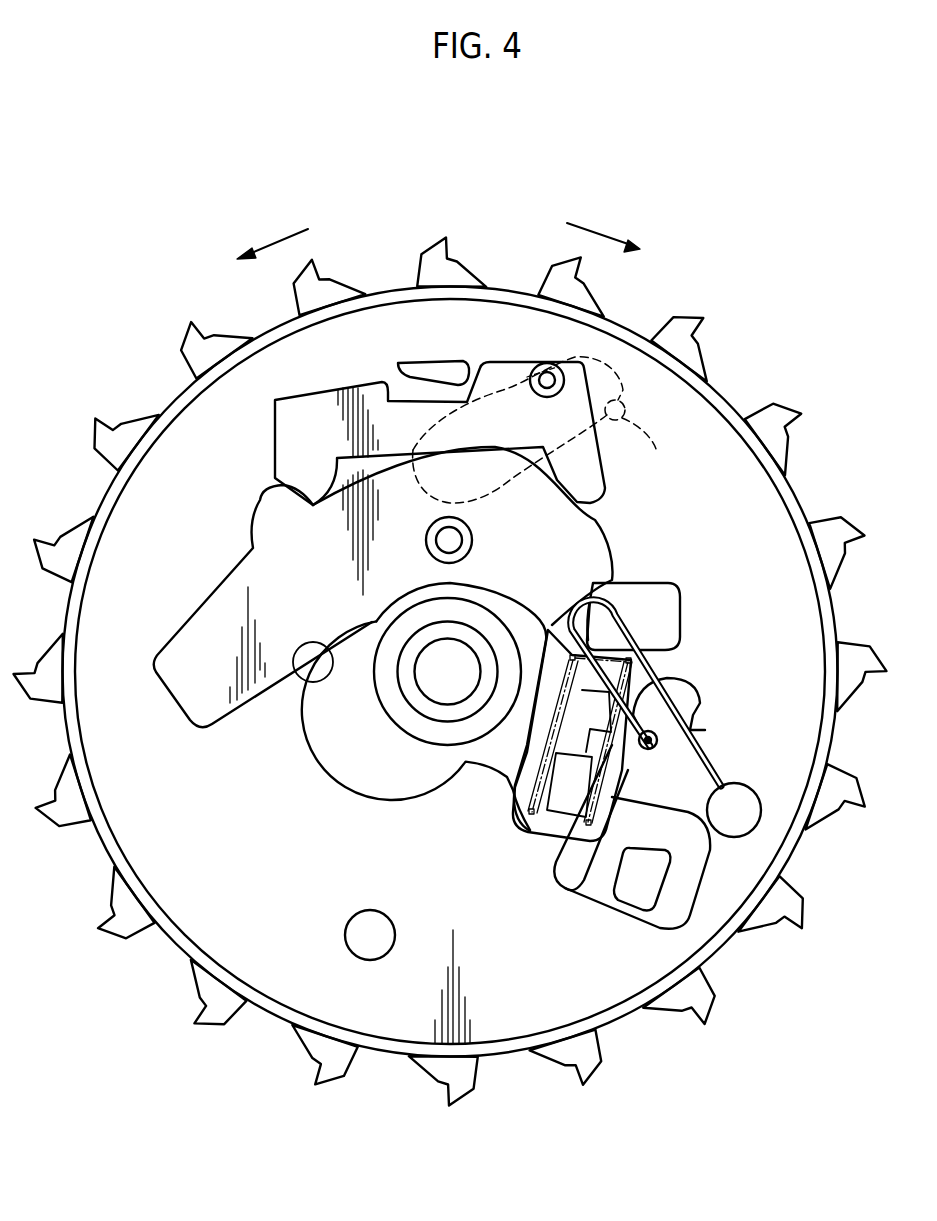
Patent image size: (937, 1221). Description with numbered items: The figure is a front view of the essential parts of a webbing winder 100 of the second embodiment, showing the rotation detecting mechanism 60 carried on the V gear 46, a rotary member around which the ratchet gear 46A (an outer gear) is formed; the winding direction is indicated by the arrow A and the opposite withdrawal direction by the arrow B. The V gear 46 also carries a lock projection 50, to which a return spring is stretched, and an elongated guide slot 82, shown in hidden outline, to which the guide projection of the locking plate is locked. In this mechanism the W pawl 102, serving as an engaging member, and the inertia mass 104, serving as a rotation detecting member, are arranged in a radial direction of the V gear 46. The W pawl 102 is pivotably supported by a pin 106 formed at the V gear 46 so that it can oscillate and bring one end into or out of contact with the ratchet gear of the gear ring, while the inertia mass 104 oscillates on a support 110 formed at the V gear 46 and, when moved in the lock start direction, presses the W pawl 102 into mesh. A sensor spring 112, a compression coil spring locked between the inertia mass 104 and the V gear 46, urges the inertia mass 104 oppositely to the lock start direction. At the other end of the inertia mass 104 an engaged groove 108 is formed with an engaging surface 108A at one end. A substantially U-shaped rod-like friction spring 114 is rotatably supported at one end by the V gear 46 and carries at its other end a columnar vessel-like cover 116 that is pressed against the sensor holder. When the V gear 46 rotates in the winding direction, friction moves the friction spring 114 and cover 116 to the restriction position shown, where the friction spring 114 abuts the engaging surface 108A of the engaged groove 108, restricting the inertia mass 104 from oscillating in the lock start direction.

The rotation detecting mechanism 60 is at (450, 672).
The webbing winder 100 is at (668, 392).
The V gear 46 is at (450, 687).
The ratchet gear 46A is at (600, 1066).
The W pawl 102 is at (275, 438).
The inertia mass 104 is at (612, 550).
The pin 106 is at (550, 364).
The engaged groove 108 is at (658, 593).
The engaging surface 108A is at (578, 613).
The support 110 is at (473, 537).
The sensor spring 112 is at (517, 813).
The friction spring 114 is at (706, 730).
The cover 116 is at (706, 812).
The lock projection 50 is at (567, 883).
The guide slot 82 is at (670, 484).
The winding direction arrow A is at (284, 228).
The withdrawal direction arrow B is at (601, 221).